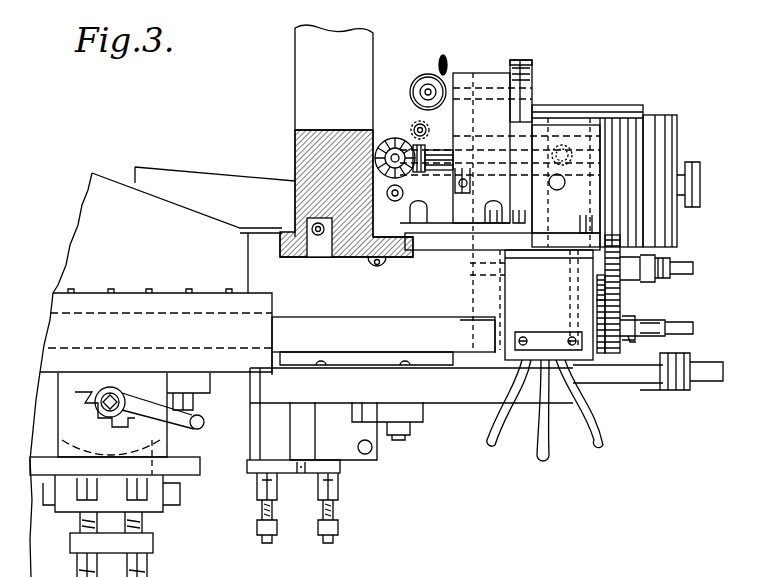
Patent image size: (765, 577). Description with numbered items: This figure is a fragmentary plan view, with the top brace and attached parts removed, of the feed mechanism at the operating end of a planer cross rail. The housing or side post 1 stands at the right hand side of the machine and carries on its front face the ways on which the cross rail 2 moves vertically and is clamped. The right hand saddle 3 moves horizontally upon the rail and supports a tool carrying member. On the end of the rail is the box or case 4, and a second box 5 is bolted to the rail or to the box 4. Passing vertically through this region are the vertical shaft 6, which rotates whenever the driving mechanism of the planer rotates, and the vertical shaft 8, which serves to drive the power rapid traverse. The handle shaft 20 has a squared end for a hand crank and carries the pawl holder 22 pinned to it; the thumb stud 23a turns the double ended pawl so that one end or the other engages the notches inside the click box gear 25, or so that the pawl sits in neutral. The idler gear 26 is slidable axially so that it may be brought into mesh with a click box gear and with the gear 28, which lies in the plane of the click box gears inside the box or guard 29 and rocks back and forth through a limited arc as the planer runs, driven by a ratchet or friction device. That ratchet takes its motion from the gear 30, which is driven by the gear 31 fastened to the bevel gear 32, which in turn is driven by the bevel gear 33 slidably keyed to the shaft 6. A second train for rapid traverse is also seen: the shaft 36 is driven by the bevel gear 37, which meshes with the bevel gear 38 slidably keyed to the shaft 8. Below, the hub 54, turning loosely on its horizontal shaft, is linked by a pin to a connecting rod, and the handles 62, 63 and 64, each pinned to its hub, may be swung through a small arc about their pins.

The housing or side post 1 is at (352, 254).
The cross rail 2 is at (352, 325).
The right hand saddle 3 is at (156, 330).
The box or case 4 is at (531, 305).
The second box 5 is at (557, 190).
The vertical shaft 6 is at (447, 95).
The vertical shaft 8 is at (346, 141).
The handle shaft 20 is at (660, 323).
The pawl holder 22 is at (622, 305).
The thumb stud 23a is at (648, 344).
The click box gear 25 is at (596, 322).
The idler gear 26 is at (588, 282).
The gear 28 is at (575, 160).
The box or guard 29 is at (660, 95).
The gear 30 is at (500, 148).
The gear 31 is at (535, 104).
The bevel gear 32 is at (448, 72).
The bevel gear 33 is at (415, 68).
The shaft 36 is at (462, 140).
The bevel gear 37 is at (412, 119).
The bevel gear 38 is at (390, 200).
The hub 54 is at (477, 336).
The handle 62 is at (518, 380).
The handle 63 is at (540, 410).
The handle 64 is at (582, 408).